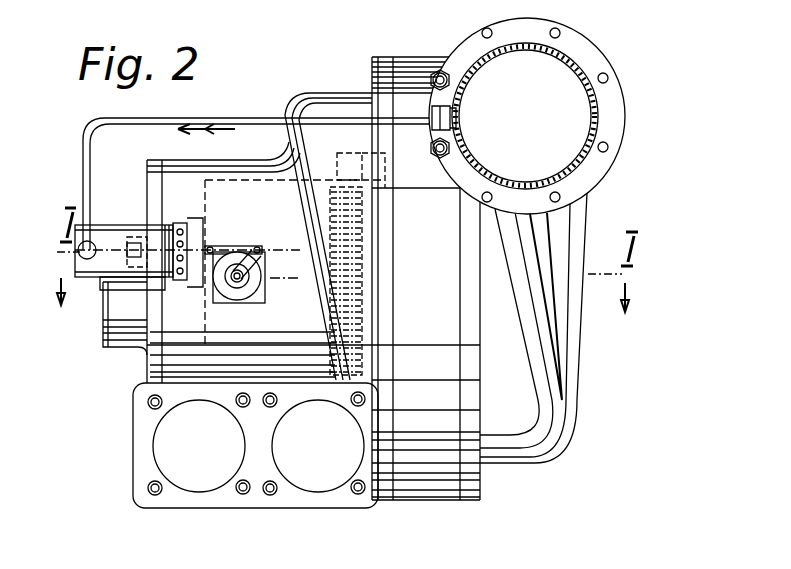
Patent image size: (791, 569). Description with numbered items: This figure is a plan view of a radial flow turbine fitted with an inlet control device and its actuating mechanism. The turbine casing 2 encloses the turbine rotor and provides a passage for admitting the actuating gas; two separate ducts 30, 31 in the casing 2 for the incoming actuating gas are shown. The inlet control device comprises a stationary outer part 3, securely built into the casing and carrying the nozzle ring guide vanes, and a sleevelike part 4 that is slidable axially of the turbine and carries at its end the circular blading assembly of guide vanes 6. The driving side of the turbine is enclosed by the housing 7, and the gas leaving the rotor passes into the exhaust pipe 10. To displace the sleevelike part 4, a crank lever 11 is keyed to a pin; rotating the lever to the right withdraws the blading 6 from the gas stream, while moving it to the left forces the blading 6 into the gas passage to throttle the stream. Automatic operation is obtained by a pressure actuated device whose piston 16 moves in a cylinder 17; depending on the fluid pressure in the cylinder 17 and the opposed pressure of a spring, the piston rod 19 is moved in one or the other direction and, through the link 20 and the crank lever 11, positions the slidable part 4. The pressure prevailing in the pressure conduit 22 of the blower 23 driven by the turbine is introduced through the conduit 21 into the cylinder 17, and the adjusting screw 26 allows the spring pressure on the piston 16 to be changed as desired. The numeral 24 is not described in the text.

The turbine casing 2 is at (243, 445).
The outer part 3 is at (346, 152).
The sleevelike part 4 is at (212, 306).
The guide vanes 6 is at (337, 163).
The housing 7 is at (414, 492).
The exhaust pipe 10 is at (138, 342).
The crank lever 11 is at (248, 266).
The piston 16 is at (125, 272).
The cylinder 17 is at (100, 226).
The piston rod 19 is at (166, 232).
The link 20 is at (229, 247).
The conduit 21 is at (160, 117).
The pressure conduit 22 is at (494, 124).
The blower 23 is at (488, 383).
The connection 24 is at (574, 565).
The adjusting screw 26 is at (200, 221).
The duct 30 is at (172, 447).
The duct 31 is at (291, 447).